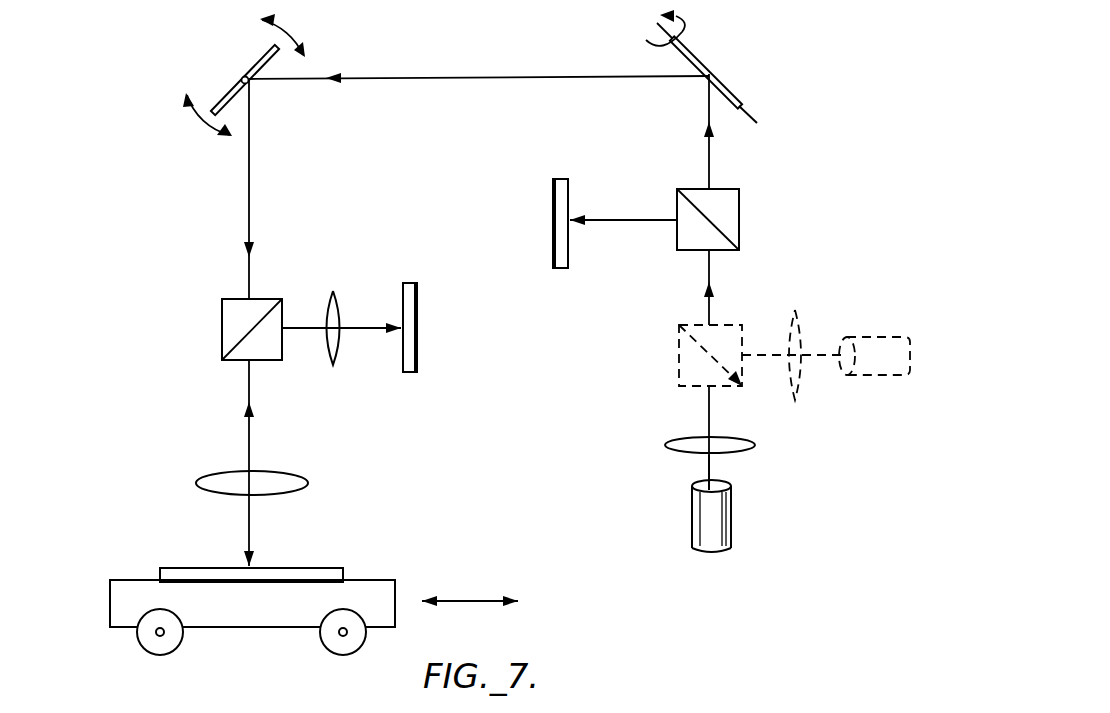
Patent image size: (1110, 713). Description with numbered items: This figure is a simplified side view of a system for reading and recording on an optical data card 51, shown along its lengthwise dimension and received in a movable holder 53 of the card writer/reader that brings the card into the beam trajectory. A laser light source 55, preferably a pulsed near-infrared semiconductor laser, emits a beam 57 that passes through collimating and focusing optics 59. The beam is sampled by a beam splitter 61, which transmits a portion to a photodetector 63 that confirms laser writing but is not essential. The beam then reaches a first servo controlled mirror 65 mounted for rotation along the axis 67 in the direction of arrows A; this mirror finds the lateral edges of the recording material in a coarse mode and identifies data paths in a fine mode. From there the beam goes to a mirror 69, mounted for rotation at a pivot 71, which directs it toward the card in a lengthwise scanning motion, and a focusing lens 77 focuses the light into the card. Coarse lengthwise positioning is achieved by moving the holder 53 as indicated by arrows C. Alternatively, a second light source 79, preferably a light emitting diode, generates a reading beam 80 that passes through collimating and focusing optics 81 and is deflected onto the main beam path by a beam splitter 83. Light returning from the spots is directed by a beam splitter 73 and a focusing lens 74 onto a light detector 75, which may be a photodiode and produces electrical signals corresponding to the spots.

The data card 51 is at (170, 568).
The movable holder 53 is at (125, 582).
The laser light source 55 is at (692, 527).
The beam 57 is at (708, 468).
The collimating and focusing optics 59 is at (682, 440).
The beam splitter 61 is at (740, 190).
The photodetector 63 is at (553, 182).
The first servo controlled mirror 65 is at (690, 53).
The axis 67 is at (751, 115).
The mirror 69 is at (261, 63).
The pivot 71 is at (243, 78).
The beam splitter 73 is at (224, 299).
The focusing lens 74 is at (334, 293).
The light detector 75 is at (418, 294).
The focusing lens 77 is at (226, 474).
The second light source 79 is at (873, 378).
The reading beam 80 is at (823, 355).
The collimating and focusing optics 81 is at (800, 390).
The beam splitter 83 is at (679, 350).